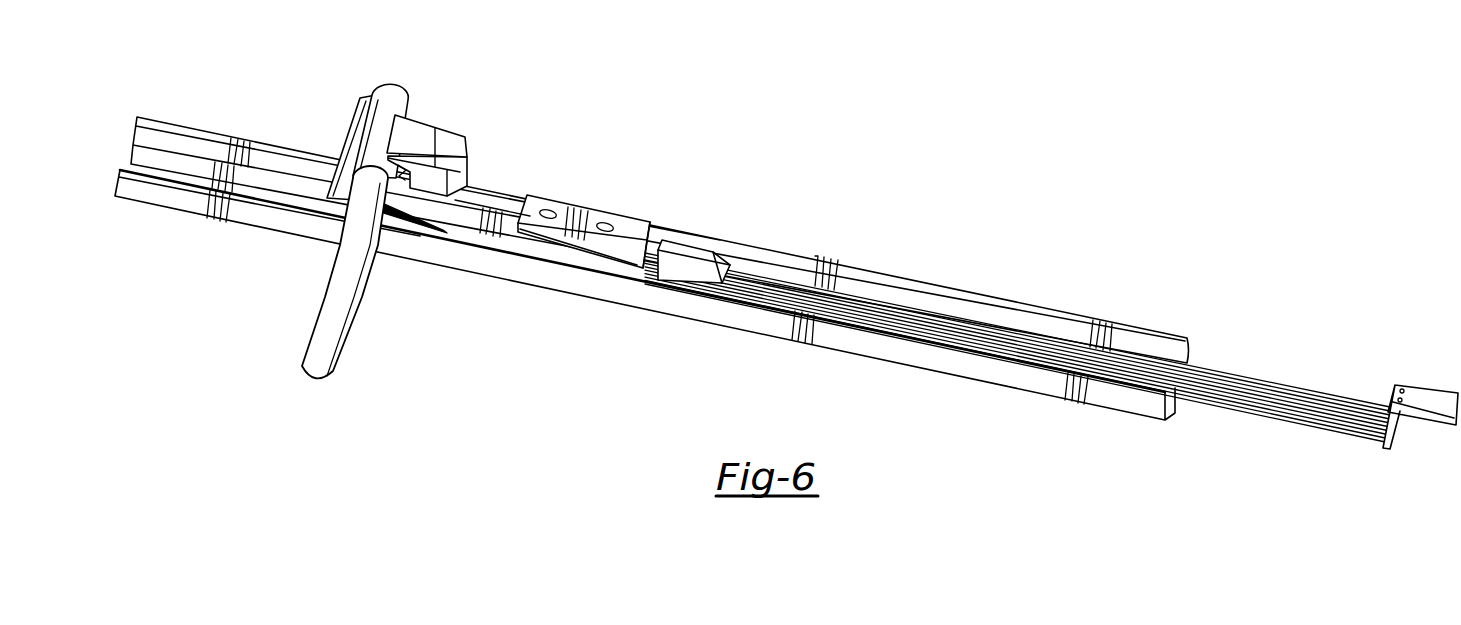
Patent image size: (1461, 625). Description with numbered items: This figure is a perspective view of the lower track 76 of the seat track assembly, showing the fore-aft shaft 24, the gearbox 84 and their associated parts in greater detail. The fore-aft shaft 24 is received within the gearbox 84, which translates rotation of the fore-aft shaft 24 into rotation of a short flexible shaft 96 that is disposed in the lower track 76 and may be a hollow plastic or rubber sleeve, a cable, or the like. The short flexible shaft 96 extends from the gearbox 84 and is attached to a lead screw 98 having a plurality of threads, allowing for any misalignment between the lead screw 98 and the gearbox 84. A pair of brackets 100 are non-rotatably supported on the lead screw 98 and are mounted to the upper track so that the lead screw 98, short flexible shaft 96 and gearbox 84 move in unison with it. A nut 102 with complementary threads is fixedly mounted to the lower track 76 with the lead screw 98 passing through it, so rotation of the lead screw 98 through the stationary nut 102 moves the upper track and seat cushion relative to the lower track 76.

The fore-aft shaft 24 is at (326, 332).
The lower track 76 is at (189, 212).
The gearbox 84 is at (415, 134).
The short flexible shaft 96 is at (472, 210).
The lead screw 98 is at (953, 326).
The brackets 100 is at (627, 228).
The nut 102 is at (702, 260).